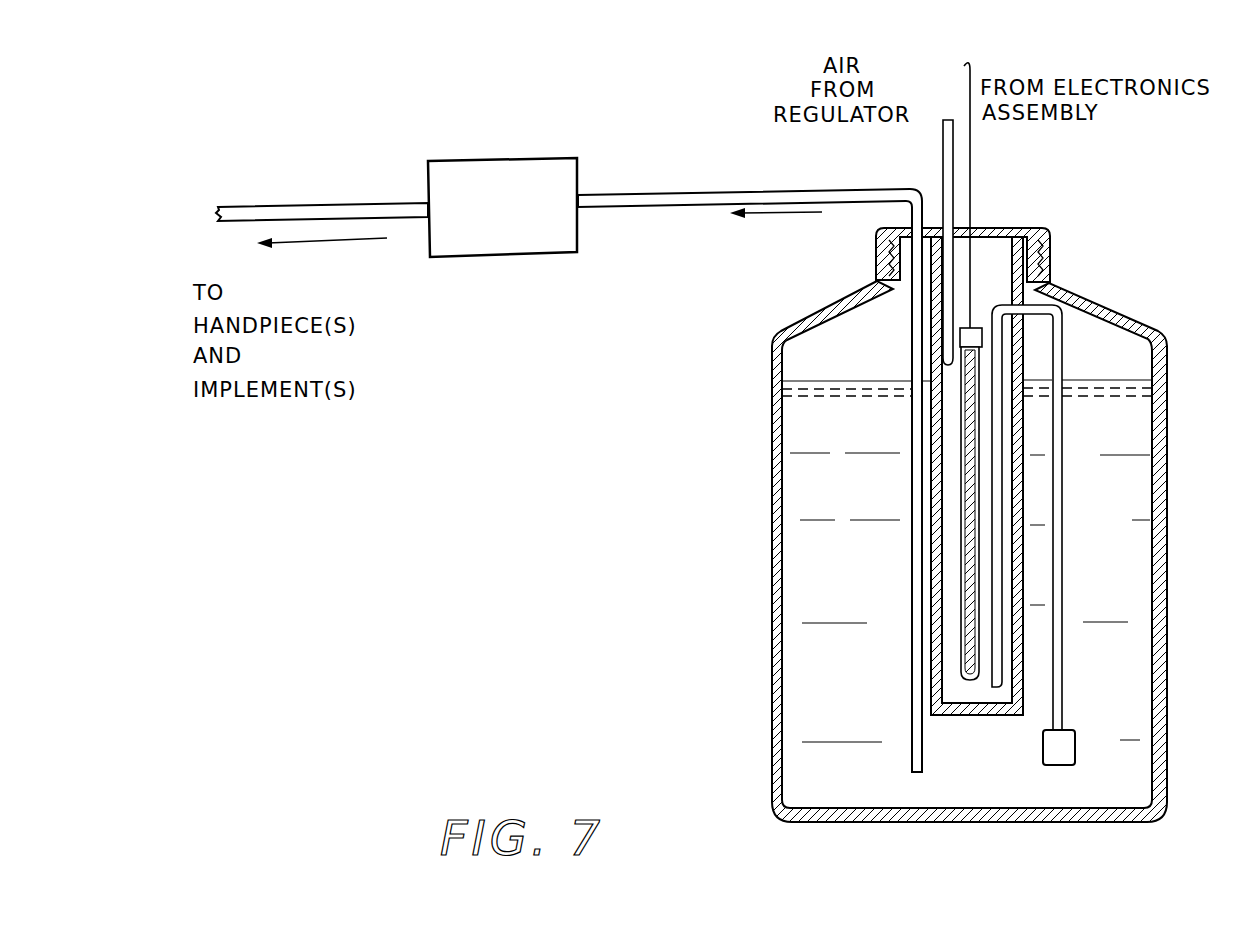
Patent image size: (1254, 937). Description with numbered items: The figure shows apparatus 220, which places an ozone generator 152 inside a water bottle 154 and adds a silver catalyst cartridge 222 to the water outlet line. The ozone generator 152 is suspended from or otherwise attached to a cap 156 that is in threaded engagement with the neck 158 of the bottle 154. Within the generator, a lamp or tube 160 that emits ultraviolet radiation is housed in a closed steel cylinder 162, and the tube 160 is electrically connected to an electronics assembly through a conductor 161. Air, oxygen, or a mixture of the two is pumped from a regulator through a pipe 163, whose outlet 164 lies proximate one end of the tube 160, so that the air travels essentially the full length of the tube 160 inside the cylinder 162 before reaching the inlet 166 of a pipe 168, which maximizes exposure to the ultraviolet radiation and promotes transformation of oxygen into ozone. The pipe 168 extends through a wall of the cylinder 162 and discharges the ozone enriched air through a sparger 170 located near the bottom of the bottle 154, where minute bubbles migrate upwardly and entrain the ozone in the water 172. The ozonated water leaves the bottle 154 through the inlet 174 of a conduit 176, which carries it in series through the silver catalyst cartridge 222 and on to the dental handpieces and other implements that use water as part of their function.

The ozone generator 152 is at (1035, 552).
The bottle 154 is at (772, 658).
The cap 156 is at (1027, 223).
The neck 158 is at (1050, 260).
The tube 160 is at (978, 690).
The conductor 161 is at (1010, 168).
The closed steel cylinder 162 is at (995, 688).
The pipe 163 is at (943, 157).
The outlet 164 is at (953, 367).
The inlet 166 is at (1027, 695).
The pipe 168 is at (1100, 452).
The sparger 170 is at (1110, 745).
The water 172 is at (1135, 608).
The inlet 174 is at (918, 778).
The conduit 176 is at (323, 207).
The apparatus 220 is at (794, 313).
The silver catalyst cartridge 222 is at (470, 160).